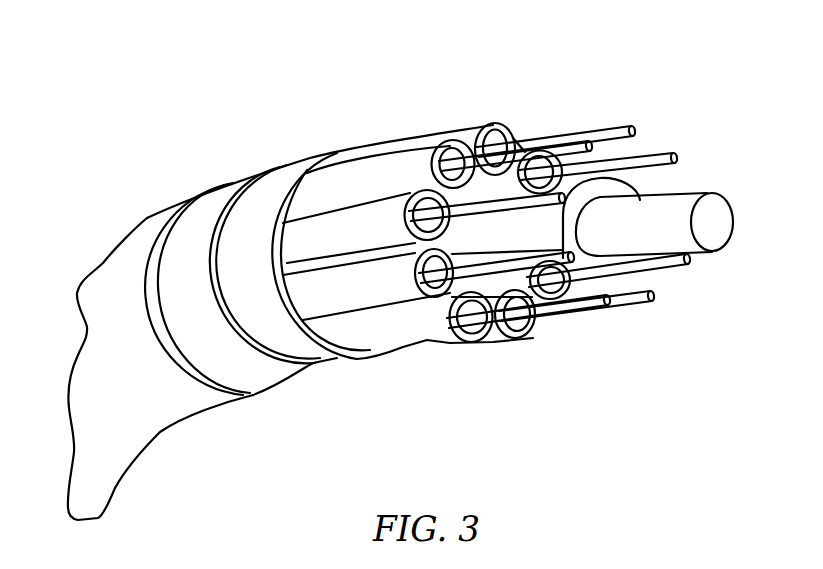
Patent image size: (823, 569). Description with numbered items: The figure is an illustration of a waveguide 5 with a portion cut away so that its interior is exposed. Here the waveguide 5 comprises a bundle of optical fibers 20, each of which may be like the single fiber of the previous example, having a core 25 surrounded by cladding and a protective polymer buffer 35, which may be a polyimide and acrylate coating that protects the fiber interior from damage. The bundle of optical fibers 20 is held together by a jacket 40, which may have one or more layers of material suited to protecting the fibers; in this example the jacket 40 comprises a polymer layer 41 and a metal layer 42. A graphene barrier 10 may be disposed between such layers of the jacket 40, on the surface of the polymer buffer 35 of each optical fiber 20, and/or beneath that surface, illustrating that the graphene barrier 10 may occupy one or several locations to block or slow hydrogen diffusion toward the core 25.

The waveguide 5 is at (278, 403).
The graphene barrier 10 is at (208, 205).
The optical fibers 20 is at (486, 358).
The core 25 is at (598, 125).
The polymer buffer 35 is at (427, 343).
The jacket 40 is at (130, 467).
The polymer layer 41 is at (147, 218).
The metal layer 42 is at (277, 168).